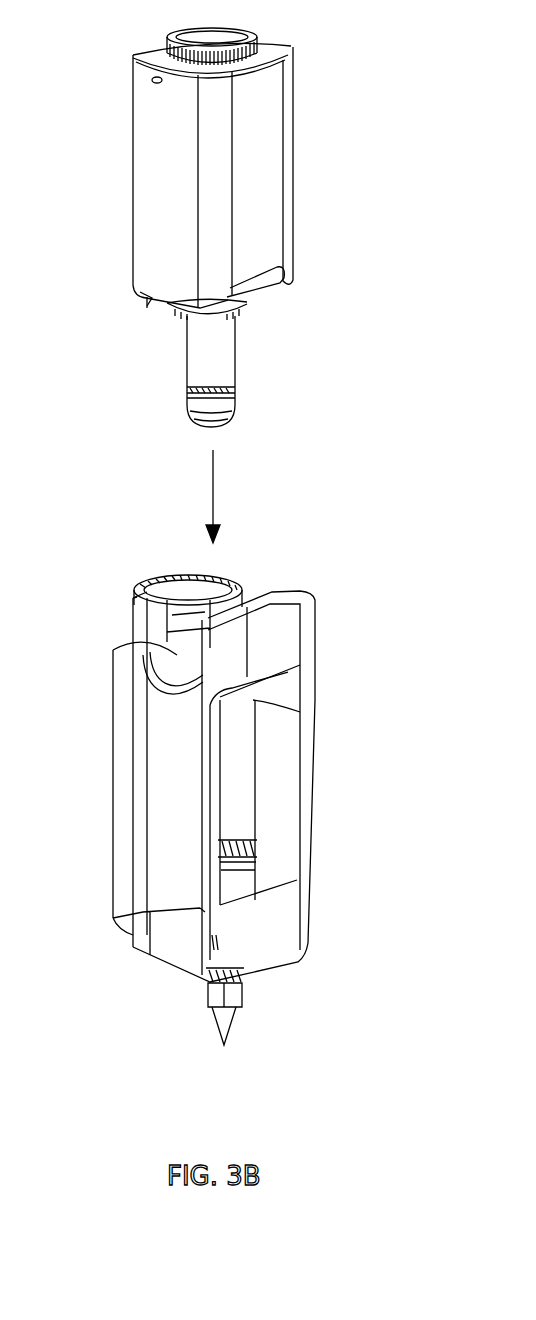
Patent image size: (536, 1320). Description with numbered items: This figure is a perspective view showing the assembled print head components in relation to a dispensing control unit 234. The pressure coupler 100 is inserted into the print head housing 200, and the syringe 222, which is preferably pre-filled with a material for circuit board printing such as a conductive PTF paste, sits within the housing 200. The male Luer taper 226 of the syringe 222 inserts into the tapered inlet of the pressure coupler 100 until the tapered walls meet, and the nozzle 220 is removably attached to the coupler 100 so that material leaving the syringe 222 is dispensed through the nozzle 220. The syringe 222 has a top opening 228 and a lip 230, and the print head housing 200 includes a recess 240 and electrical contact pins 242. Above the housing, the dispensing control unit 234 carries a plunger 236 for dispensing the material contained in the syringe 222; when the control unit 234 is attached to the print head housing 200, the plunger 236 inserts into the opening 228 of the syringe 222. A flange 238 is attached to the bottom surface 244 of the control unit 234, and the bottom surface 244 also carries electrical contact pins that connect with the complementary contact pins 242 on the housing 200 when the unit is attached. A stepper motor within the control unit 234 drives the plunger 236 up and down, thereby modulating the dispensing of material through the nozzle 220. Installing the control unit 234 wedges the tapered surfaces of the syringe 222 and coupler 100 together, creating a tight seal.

The dispensing control unit 234 is at (300, 52).
The bottom surface 244 is at (150, 298).
The flange 238 is at (168, 306).
The plunger 236 is at (237, 362).
The print head housing 200 is at (220, 796).
The recess 240 is at (247, 607).
The electrical contact pins 242 is at (183, 577).
The top opening 228 is at (137, 597).
The lip 230 is at (173, 637).
The syringe 222 is at (257, 767).
The male Luer taper 226 is at (250, 893).
The pressure coupler 100 is at (262, 910).
The nozzle 220 is at (244, 995).